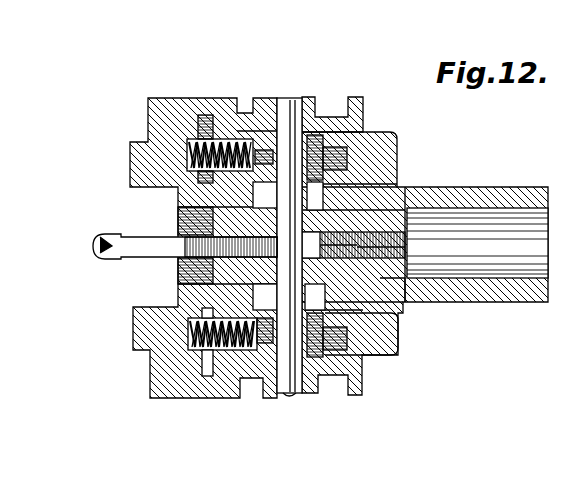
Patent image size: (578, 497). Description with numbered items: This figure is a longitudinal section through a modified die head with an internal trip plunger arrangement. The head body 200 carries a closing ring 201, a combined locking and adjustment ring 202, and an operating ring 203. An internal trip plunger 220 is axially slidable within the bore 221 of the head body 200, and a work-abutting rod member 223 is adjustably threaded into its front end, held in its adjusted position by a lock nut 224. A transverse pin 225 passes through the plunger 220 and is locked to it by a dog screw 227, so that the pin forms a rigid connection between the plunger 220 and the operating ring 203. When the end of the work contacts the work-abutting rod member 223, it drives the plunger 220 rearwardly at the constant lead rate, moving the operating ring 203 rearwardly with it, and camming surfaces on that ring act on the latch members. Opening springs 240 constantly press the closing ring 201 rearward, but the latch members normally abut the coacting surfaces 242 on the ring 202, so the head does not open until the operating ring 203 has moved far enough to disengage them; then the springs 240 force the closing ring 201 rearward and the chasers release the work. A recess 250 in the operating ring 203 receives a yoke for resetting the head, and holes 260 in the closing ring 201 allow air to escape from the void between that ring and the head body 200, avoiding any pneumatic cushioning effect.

The head body 200 is at (401, 190).
The closing ring 201 is at (212, 372).
The combined locking and adjustment ring 202 is at (390, 341).
The operating ring 203 is at (275, 98).
The internal trip plunger 220 is at (408, 301).
The bore 221 is at (483, 278).
The work-abutting rod member 223 is at (113, 243).
The lock nut 224 is at (190, 221).
The transverse pin 225 is at (294, 378).
The dog screw 227 is at (398, 248).
The opening springs 240 is at (234, 140).
The coacting surfaces 242 is at (328, 145).
The recess 250 is at (337, 104).
The holes 260 is at (260, 360).